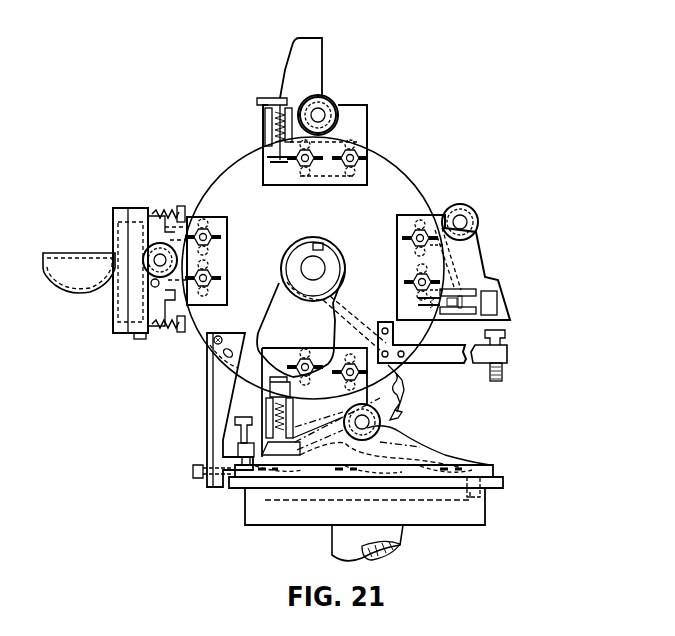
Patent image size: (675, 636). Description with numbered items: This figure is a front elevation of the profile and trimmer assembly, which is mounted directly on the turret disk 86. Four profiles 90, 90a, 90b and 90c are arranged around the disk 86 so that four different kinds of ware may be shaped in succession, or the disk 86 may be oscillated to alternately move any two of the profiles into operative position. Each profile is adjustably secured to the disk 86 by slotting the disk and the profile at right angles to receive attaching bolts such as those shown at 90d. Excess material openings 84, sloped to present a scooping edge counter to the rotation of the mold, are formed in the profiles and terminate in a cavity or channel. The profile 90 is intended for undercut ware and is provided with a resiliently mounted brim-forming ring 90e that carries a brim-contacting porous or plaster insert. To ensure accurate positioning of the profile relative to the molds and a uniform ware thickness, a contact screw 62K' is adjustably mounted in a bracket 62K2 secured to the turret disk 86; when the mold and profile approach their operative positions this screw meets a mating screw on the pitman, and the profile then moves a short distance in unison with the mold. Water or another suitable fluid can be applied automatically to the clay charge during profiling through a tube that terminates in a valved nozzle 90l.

The turret disk 86 is at (399, 170).
The profile 90c is at (313, 63).
The attaching bolts 90d is at (292, 185).
The brim-forming ring 90e is at (122, 203).
The profile 90 is at (57, 253).
The excess material openings 84 is at (57, 288).
The profile 90b is at (483, 264).
The bracket 62K2 is at (509, 351).
The contact screw 62K' is at (539, 379).
The valved nozzle 90l is at (404, 398).
The profile 90a is at (383, 423).